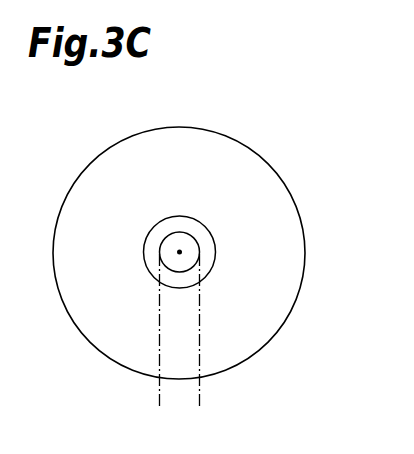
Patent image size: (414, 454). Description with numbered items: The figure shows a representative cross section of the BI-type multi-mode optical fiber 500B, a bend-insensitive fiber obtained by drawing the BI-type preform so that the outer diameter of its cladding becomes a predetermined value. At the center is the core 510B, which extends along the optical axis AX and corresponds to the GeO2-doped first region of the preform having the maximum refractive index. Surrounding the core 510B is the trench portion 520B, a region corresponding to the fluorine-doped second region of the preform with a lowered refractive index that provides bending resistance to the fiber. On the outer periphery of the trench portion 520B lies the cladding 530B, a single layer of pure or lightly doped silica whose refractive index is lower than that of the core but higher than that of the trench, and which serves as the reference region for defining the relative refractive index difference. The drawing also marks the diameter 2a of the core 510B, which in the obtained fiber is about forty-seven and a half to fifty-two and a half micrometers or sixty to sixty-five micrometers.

The BI-type multi-mode optical fiber 500B is at (242, 131).
The core 510B is at (172, 247).
The trench portion 520B is at (162, 223).
The cladding 530B is at (183, 188).
The optical axis AX is at (181, 251).
The diameter of the core 2a is at (199, 391).